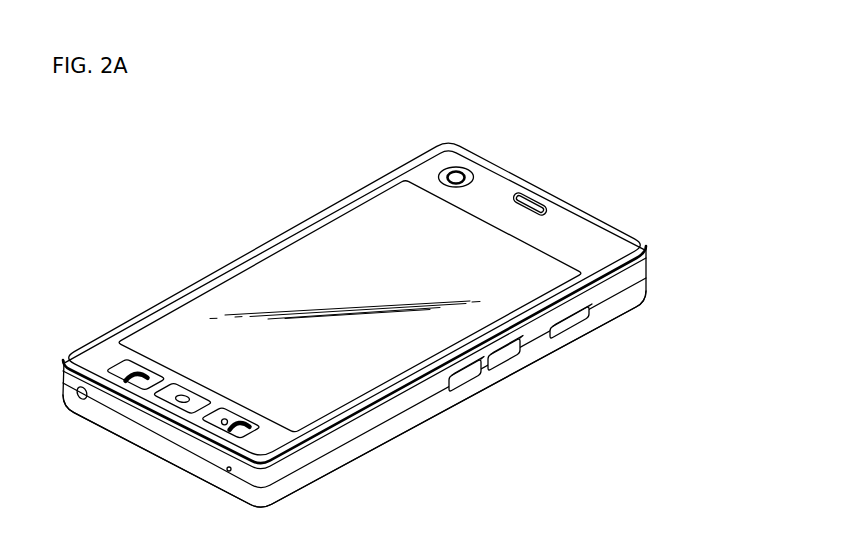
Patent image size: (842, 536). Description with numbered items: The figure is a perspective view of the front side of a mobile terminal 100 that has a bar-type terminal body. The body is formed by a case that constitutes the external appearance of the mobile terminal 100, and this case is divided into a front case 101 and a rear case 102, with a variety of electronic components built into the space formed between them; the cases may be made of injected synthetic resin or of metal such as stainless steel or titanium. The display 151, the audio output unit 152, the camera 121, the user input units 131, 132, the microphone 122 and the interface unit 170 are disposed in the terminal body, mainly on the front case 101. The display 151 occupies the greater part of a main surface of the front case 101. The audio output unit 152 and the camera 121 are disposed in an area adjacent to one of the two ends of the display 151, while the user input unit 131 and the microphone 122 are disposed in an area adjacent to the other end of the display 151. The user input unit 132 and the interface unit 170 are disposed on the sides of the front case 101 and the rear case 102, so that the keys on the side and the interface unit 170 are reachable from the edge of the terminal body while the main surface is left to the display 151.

The mobile terminal 100 is at (325, 195).
The front case 101 is at (641, 268).
The rear case 102 is at (642, 290).
The camera 121 is at (463, 169).
The microphone 122 is at (226, 472).
The user input unit 131 is at (121, 367).
The user input unit 132 is at (467, 378).
The display 151 is at (262, 269).
The audio output unit 152 is at (541, 199).
The interface unit 170 is at (570, 322).